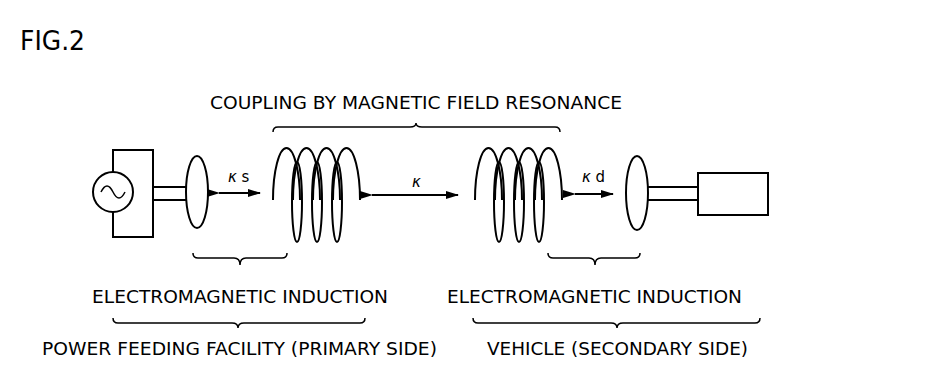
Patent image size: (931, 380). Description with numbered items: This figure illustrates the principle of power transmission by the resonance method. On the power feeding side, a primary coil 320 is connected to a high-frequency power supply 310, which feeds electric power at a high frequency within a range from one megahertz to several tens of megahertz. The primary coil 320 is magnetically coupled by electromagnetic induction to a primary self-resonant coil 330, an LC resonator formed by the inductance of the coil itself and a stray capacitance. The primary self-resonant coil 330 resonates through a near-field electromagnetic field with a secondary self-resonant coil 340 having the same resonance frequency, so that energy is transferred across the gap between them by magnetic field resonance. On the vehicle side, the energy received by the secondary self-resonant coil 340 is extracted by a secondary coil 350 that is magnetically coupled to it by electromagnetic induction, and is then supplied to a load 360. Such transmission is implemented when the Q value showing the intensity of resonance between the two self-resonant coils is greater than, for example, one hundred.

The high-frequency power supply 310 is at (107, 172).
The primary coil 320 is at (197, 156).
The primary self-resonant coil 330 is at (317, 243).
The secondary self-resonant coil 340 is at (518, 243).
The secondary coil 350 is at (636, 156).
The load 360 is at (735, 173).